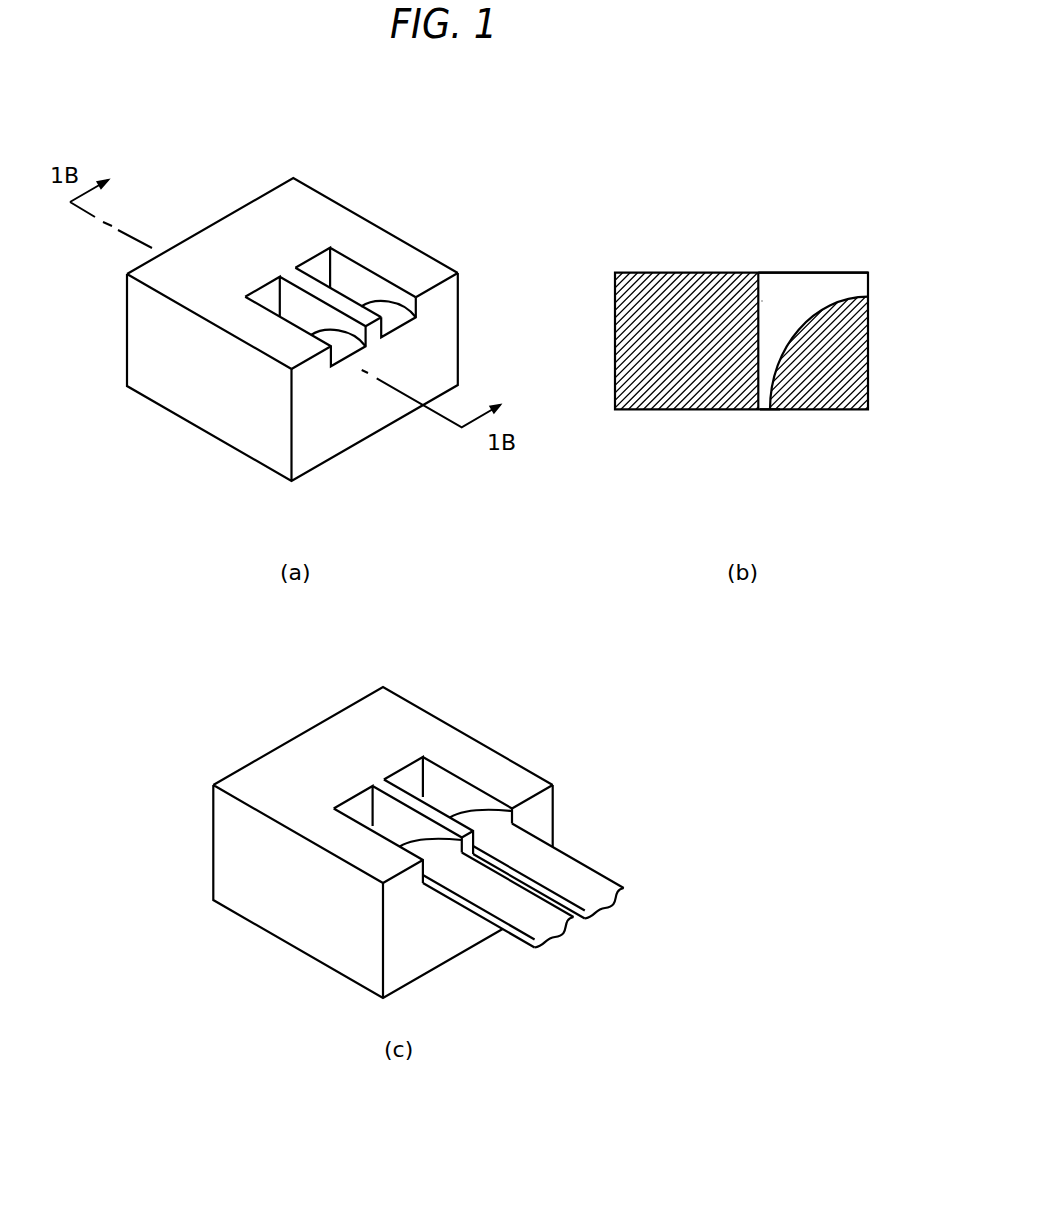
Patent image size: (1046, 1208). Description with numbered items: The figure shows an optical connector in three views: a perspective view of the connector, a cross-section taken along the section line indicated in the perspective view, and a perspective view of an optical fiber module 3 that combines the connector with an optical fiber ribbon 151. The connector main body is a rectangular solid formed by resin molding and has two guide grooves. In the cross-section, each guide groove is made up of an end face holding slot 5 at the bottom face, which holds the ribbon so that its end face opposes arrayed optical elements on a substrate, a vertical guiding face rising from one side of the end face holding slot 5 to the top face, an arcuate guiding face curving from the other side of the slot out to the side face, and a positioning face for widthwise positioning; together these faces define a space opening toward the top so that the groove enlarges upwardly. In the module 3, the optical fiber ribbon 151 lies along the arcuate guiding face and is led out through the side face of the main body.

The optical fiber module 3 is at (606, 735).
The end face holding slot 5 is at (770, 410).
The optical fiber ribbon 151 is at (573, 862).